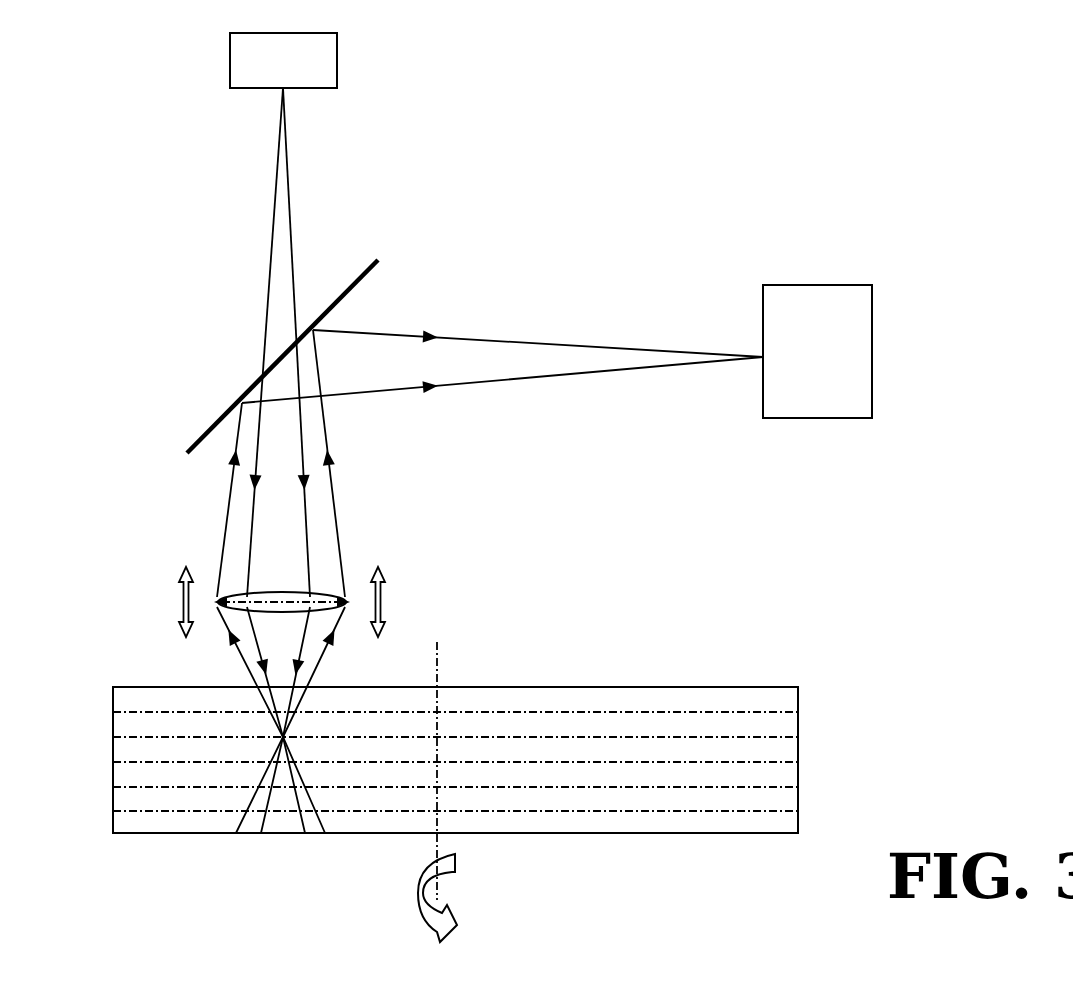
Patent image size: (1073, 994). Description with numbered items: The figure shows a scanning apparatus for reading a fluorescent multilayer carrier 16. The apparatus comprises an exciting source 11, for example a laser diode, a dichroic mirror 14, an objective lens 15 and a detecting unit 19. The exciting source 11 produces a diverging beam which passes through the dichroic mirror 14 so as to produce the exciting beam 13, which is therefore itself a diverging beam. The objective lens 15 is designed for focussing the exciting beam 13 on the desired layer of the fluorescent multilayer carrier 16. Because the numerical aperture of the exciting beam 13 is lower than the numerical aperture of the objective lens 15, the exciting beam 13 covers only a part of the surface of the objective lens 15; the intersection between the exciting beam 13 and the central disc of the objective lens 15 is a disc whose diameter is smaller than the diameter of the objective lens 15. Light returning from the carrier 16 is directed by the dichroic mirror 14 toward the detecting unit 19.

The exciting source 11 is at (337, 60).
The exciting beam 13 is at (307, 512).
The dichroic mirror 14 is at (198, 442).
The objective lens 15 is at (345, 602).
The fluorescent multilayer carrier 16 is at (798, 774).
The detecting unit 19 is at (847, 285).